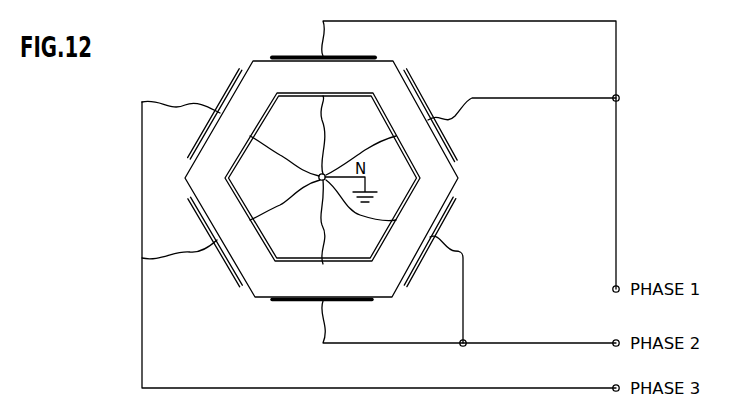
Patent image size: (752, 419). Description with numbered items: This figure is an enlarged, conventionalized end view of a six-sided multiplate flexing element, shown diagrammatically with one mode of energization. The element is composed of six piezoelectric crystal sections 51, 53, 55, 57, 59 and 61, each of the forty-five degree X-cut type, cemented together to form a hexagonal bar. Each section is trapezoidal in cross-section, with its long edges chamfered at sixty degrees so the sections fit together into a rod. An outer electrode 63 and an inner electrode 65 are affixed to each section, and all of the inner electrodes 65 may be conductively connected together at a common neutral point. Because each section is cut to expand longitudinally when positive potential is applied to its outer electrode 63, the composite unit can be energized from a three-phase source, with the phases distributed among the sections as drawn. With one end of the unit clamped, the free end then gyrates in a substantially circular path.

The piezoelectric crystal section 51 is at (268, 66).
The piezoelectric crystal section 53 is at (403, 102).
The piezoelectric crystal section 55 is at (430, 199).
The piezoelectric crystal section 57 is at (353, 285).
The piezoelectric crystal section 59 is at (252, 283).
The piezoelectric crystal section 61 is at (213, 158).
The outer electrode 63 is at (447, 140).
The inner electrode 65 is at (408, 158).